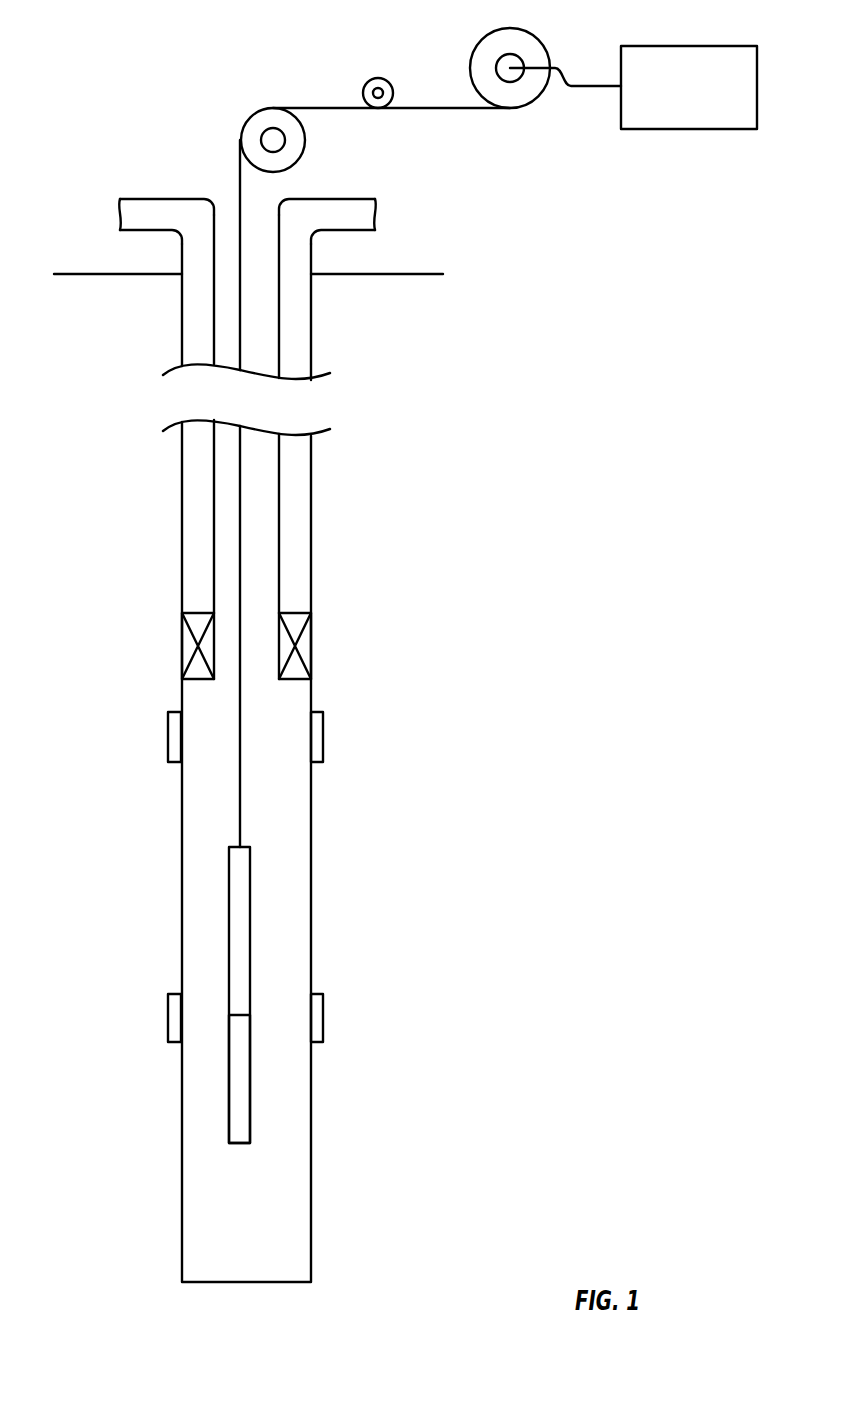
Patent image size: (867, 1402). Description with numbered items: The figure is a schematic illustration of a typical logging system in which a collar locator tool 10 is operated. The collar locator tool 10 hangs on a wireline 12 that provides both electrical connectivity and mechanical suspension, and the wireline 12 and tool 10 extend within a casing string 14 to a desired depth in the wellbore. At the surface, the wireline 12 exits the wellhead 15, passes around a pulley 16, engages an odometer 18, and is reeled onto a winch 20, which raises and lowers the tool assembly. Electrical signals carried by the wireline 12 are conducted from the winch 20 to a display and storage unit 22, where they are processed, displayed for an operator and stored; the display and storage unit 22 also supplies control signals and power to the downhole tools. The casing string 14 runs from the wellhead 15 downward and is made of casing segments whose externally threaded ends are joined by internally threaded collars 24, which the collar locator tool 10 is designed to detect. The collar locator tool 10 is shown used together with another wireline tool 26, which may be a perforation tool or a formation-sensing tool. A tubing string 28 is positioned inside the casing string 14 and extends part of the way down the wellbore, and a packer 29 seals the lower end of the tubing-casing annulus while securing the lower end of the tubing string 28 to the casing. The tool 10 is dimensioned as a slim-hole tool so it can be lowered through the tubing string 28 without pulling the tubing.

The collar locator tool 10 is at (238, 878).
The wireline 12 is at (238, 825).
The casing string 14 is at (311, 585).
The wellhead 15 is at (312, 250).
The pulley 16 is at (257, 122).
The odometer 18 is at (390, 81).
The winch 20 is at (520, 36).
The display and storage unit 22 is at (684, 45).
The threaded collar 24 is at (315, 723).
The other wireline tool 26 is at (238, 1108).
The tubing string 28 is at (295, 542).
The packer 29 is at (190, 647).